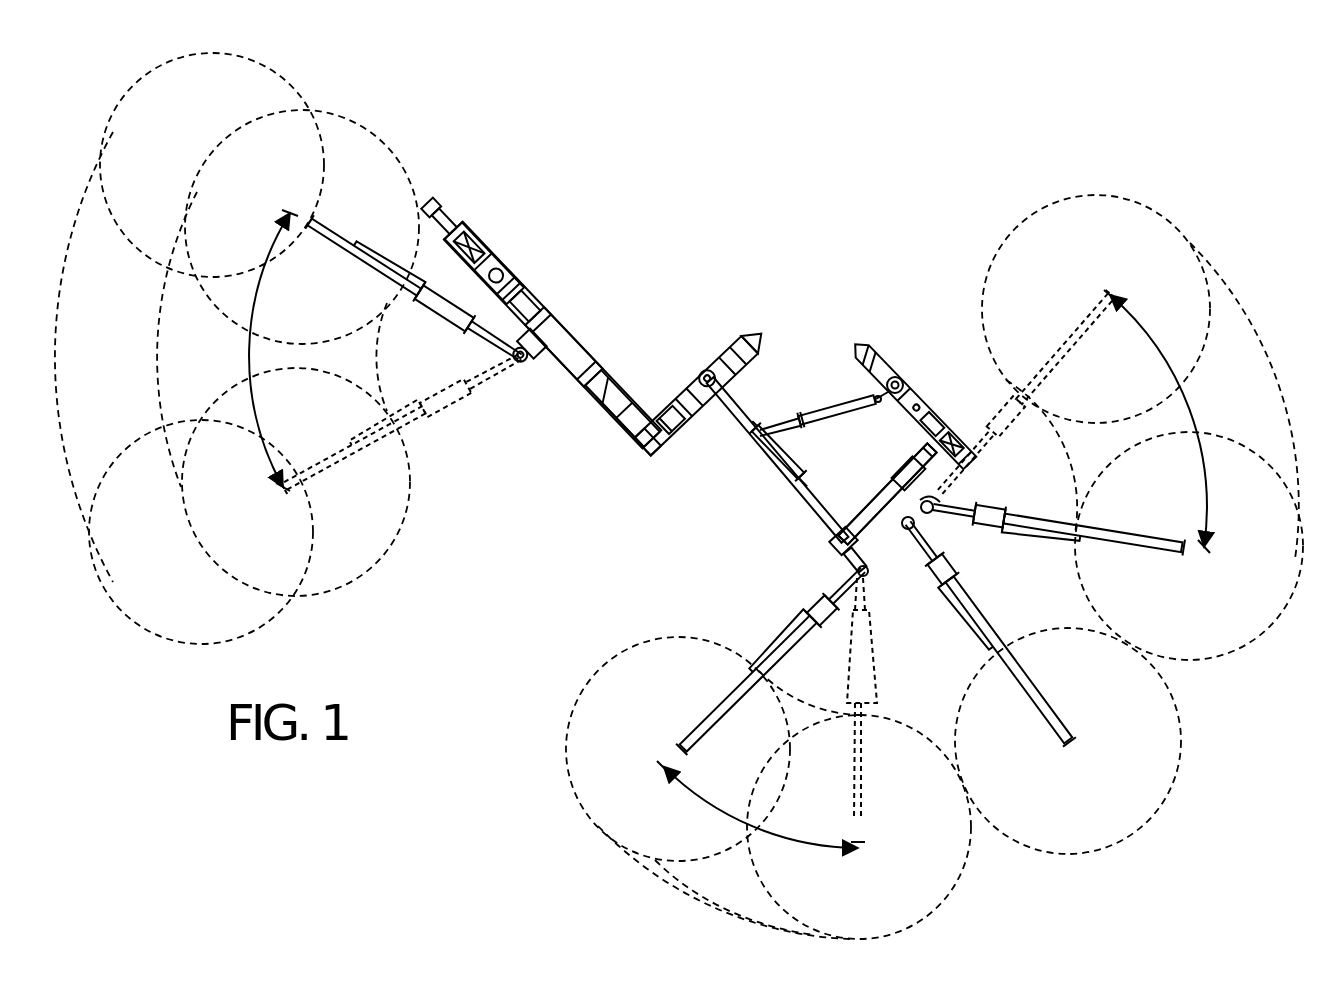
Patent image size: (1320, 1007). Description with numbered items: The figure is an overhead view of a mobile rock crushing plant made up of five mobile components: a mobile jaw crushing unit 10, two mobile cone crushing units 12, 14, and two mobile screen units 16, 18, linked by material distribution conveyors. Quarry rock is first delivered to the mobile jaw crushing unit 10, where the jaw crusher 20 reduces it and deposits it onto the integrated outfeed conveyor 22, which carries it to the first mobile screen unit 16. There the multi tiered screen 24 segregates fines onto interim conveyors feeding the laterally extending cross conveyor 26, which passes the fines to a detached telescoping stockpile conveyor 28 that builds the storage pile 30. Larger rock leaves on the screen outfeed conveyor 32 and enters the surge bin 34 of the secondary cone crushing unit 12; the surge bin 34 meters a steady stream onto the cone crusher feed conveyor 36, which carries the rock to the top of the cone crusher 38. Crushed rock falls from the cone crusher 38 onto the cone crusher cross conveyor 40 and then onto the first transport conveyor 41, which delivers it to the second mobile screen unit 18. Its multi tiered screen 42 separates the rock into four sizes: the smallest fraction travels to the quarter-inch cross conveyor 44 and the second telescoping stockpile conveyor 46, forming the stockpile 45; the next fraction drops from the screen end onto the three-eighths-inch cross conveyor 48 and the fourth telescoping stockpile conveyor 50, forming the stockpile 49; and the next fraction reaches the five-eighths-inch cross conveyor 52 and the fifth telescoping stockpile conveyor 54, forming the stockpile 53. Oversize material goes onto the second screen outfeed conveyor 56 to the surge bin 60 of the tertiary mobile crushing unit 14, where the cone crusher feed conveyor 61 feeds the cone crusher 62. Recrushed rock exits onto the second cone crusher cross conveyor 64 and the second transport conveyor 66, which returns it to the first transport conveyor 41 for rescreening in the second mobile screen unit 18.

The mobile jaw crushing unit 10 is at (466, 210).
The mobile cone crushing unit 12 is at (673, 360).
The tertiary mobile crushing unit 14 is at (918, 378).
The first mobile screen unit 16 is at (589, 410).
The second mobile screen unit 18 is at (891, 477).
The jaw crusher 20 is at (478, 252).
The outfeed conveyor 22 is at (531, 310).
The multi tiered screen 24 is at (567, 357).
The cross conveyor 26 is at (526, 365).
The telescoping stockpile conveyor 28 is at (438, 308).
The storage pile 30 is at (190, 363).
The screen outfeed conveyor 32 is at (620, 408).
The surge bin 34 is at (655, 448).
The cone crusher feed conveyor 36 is at (690, 440).
The cone crusher 38 is at (704, 371).
The cone crusher cross conveyor 40 is at (737, 392).
The first transport conveyor 41 is at (778, 460).
The multi tiered screen 42 is at (865, 523).
The quarter-inch cross conveyor 44 is at (843, 570).
The stockpile 45 is at (713, 888).
The second telescoping stockpile conveyor 46 is at (800, 640).
The three-eighths-inch cross conveyor 48 is at (905, 531).
The stockpile 49 is at (1055, 801).
The fourth telescoping stockpile conveyor 50 is at (960, 602).
The five-eighths-inch cross conveyor 52 is at (935, 500).
The stockpile 53 is at (1199, 420).
The fifth telescoping stockpile conveyor 54 is at (1034, 345).
The second screen outfeed conveyor 56 is at (904, 478).
The surge bin 60 is at (950, 445).
The cone crusher feed conveyor 61 is at (926, 412).
The cone crusher 62 is at (898, 376).
The second cone crusher cross conveyor 64 is at (872, 394).
The second transport conveyor 66 is at (803, 410).